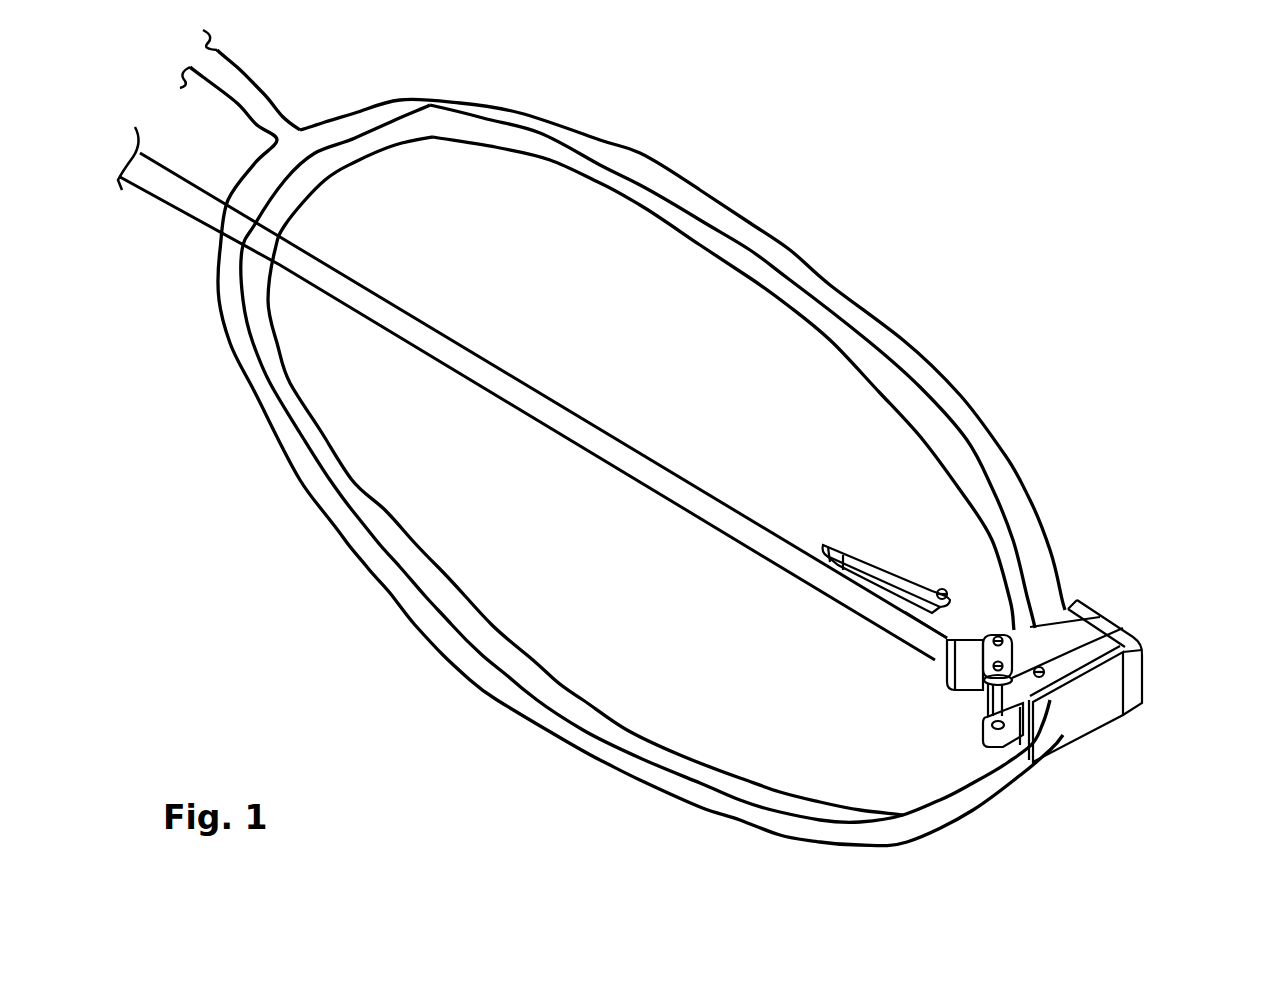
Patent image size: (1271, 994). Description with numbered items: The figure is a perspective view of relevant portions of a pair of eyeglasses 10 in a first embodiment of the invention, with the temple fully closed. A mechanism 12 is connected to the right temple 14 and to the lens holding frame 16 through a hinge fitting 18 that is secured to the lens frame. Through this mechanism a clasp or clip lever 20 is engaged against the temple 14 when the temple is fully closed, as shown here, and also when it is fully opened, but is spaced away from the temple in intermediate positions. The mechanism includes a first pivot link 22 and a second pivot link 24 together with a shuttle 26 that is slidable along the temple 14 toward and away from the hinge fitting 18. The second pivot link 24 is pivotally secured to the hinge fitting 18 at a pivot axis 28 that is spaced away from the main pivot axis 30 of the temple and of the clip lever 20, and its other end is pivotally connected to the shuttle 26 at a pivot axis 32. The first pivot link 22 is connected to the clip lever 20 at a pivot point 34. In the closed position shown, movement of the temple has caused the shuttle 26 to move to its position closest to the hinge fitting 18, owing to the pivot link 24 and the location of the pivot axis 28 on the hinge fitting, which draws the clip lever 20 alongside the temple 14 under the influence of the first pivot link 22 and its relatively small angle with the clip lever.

The pair of eyeglasses 10 is at (950, 263).
The mechanism 12 is at (912, 703).
The temple 14 is at (197, 203).
The lens holding frame 16 is at (1047, 526).
The hinge fitting 18 is at (1097, 617).
The clip lever 20 is at (877, 565).
The first pivot link 22 is at (925, 622).
The second pivot link 24 is at (1143, 637).
The shuttle 26 is at (965, 683).
The pivot axis 28 is at (1057, 717).
The main pivot axis 30 is at (1047, 673).
The pivot axis 32 is at (1000, 640).
The pivot point 34 is at (948, 588).